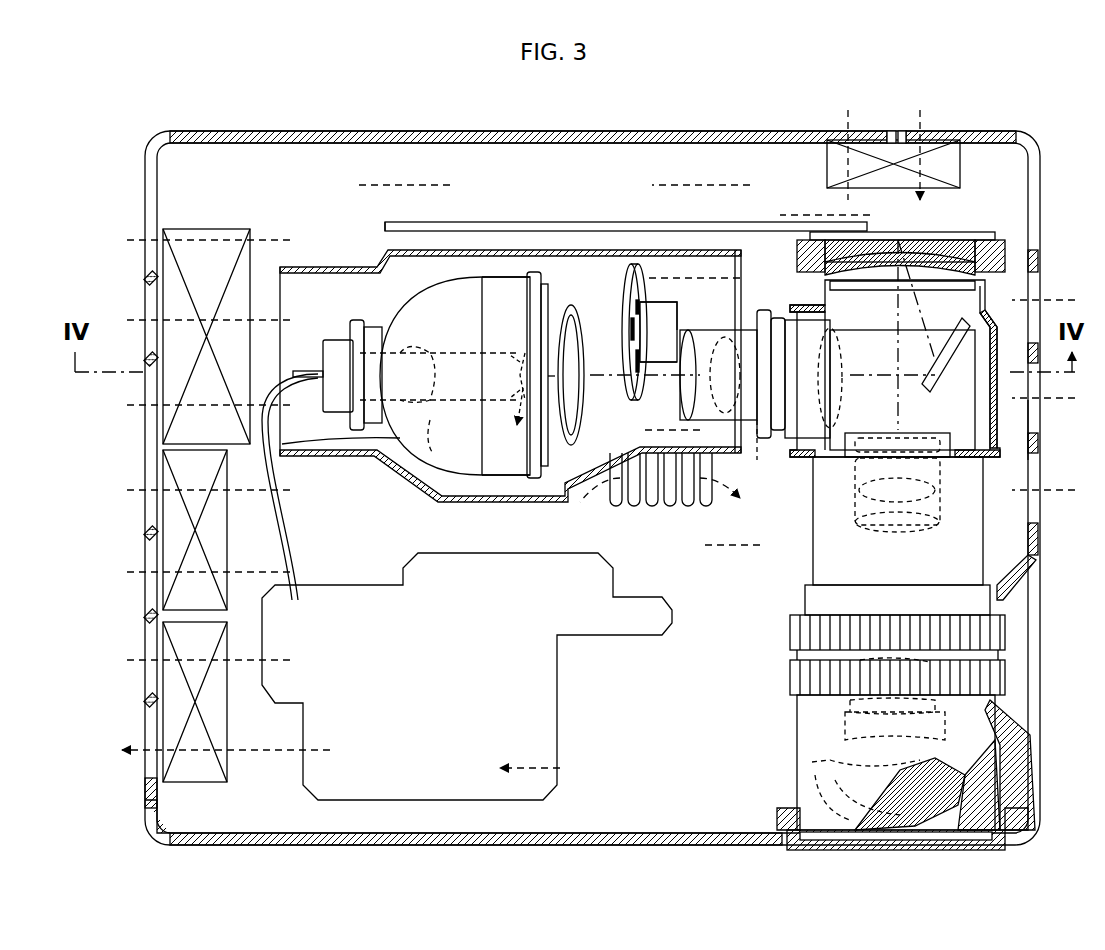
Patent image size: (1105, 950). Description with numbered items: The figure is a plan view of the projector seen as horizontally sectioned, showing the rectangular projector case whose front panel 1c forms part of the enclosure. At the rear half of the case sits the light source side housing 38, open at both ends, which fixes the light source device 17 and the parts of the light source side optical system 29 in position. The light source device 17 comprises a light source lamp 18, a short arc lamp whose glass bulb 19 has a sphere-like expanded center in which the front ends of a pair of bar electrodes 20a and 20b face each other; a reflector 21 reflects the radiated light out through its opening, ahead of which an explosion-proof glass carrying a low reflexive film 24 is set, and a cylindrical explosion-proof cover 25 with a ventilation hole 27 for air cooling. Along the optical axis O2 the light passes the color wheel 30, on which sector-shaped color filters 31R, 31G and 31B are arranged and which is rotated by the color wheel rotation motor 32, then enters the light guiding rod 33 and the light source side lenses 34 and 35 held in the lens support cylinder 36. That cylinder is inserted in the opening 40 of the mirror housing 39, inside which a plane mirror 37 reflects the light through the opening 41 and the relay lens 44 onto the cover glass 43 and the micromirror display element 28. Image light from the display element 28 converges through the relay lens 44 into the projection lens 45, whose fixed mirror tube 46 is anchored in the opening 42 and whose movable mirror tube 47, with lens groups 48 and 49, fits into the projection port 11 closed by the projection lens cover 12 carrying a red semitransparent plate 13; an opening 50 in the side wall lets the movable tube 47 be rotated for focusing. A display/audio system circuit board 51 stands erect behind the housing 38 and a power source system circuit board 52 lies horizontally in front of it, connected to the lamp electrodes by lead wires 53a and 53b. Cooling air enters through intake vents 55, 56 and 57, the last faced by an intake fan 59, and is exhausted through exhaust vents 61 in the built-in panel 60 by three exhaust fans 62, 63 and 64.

The front panel 1c is at (150, 828).
The projection port 11 is at (800, 812).
The projection lens cover 12 is at (1005, 845).
The semitransparent plate 13 is at (990, 818).
The light source device 17 is at (420, 452).
The light source lamp 18 is at (440, 350).
The glass bulb 19 is at (440, 400).
The bar electrode 20a is at (516, 397).
The bar electrode 20b is at (306, 368).
The reflector 21 is at (478, 478).
The low reflexive film 24 is at (576, 350).
The explosion-proof cover 25 is at (548, 430).
The ventilation hole 27 is at (563, 380).
The optical axis O2 is at (642, 355).
The display element 28 is at (940, 232).
The light source side optical system 29 is at (742, 312).
The color wheel 30 is at (630, 305).
The color filter 31R is at (628, 312).
The color filter 31G is at (638, 380).
The color filter 31B is at (642, 278).
The color wheel rotation motor 32 is at (677, 316).
The light guiding rod 33 is at (691, 387).
The light source side lens 34 is at (754, 451).
The light source side lens 35 is at (842, 398).
The lens support cylinder 36 is at (770, 330).
The mirror 37 is at (932, 348).
The light source side housing 38 is at (500, 236).
The mirror housing 39 is at (1000, 425).
The opening 40 is at (790, 455).
The opening 41 is at (866, 290).
The opening 42 is at (962, 458).
The cover glass 43 is at (985, 252).
The relay lens 44 is at (882, 260).
The projection lens 45 is at (990, 552).
The fixed mirror tube 46 is at (813, 515).
The movable mirror tube 47 is at (807, 713).
The lens group 48 is at (850, 530).
The lens group 49 is at (812, 762).
The opening 50 is at (1033, 622).
The display/audio system circuit board 51 is at (553, 222).
The power source system circuit board 52 is at (550, 786).
The lead wire 53a is at (290, 530).
The lead wire 53b is at (297, 558).
The intake vent 55 is at (670, 505).
The intake vent 56 is at (1040, 280).
The intake vent 57 is at (940, 135).
The intake fan 59 is at (827, 170).
The built-in panel 60 is at (146, 790).
The exhaust vent 61 is at (145, 298).
The exhaust fan 62 is at (218, 238).
The exhaust fan 63 is at (227, 533).
The exhaust fan 64 is at (227, 722).